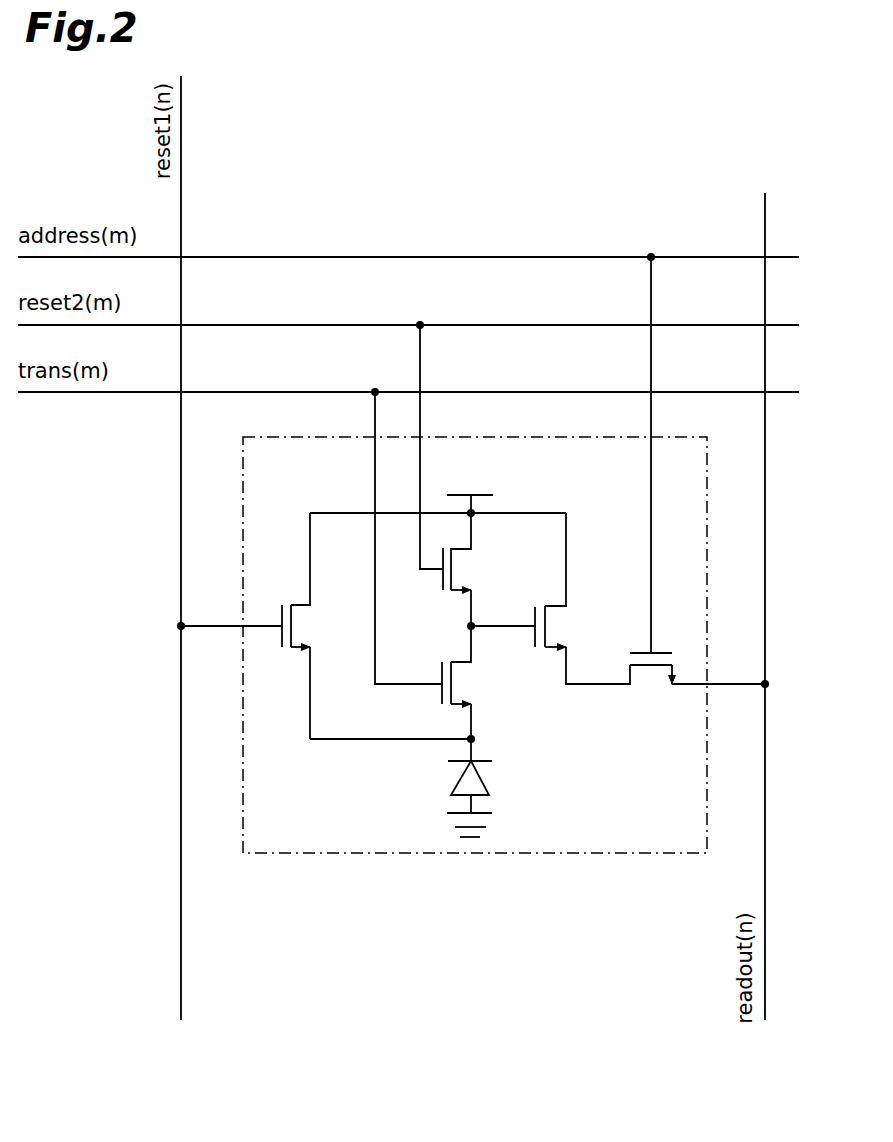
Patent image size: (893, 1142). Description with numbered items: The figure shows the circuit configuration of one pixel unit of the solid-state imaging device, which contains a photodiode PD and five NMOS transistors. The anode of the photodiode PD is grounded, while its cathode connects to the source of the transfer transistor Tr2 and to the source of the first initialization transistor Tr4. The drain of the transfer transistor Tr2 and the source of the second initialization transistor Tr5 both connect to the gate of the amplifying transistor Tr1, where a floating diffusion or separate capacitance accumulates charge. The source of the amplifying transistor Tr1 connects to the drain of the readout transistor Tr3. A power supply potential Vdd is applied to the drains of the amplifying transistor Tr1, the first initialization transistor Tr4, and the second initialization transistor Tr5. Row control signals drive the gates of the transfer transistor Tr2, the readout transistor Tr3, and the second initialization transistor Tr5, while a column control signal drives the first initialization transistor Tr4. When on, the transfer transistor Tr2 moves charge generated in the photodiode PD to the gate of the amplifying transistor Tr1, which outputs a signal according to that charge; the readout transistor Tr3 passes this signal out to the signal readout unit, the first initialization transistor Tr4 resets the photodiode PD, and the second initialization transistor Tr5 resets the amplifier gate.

The amplifying transistor Tr1 is at (582, 598).
The transfer transistor Tr2 is at (475, 682).
The readout transistor Tr3 is at (697, 685).
The first initialization transistor Tr4 is at (314, 626).
The second initialization transistor Tr5 is at (476, 569).
The photodiode PD is at (488, 788).
The power supply potential Vdd is at (470, 490).